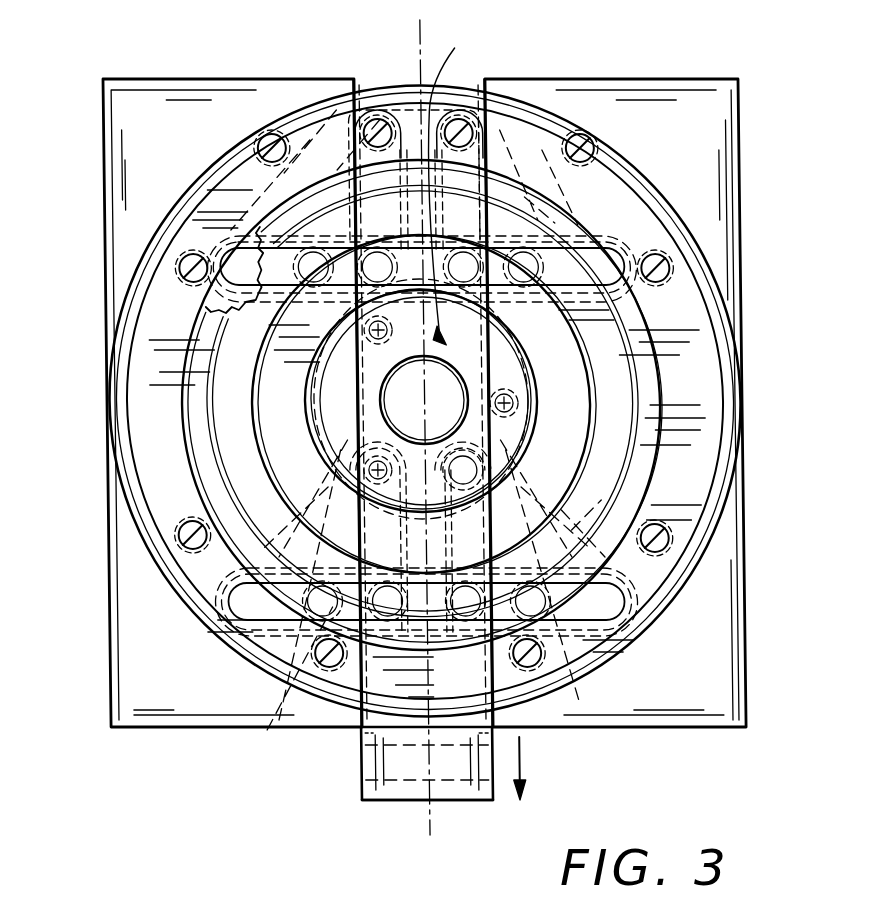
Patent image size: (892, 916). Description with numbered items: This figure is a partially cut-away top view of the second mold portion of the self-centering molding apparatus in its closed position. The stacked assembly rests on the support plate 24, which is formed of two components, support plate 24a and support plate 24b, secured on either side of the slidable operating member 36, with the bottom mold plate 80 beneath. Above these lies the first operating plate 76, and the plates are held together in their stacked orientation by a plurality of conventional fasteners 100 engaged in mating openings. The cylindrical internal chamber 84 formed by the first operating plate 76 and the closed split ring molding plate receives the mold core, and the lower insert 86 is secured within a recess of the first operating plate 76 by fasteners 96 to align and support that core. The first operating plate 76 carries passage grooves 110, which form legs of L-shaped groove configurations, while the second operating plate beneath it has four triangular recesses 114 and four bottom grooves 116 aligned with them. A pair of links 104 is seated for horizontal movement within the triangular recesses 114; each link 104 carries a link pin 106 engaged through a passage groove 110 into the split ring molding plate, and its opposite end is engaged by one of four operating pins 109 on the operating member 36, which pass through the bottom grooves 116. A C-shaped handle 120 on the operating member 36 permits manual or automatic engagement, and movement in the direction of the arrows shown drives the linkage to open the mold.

The support plate 24 is at (441, 423).
The support plate component 24a is at (579, 727).
The support plate component 24b is at (156, 728).
The operating member 36 is at (361, 760).
The first operating plate 76 is at (683, 377).
The bottom mold plate 80 is at (723, 562).
The cylindrical internal chamber 84 is at (460, 189).
The lower insert 86 is at (560, 370).
The fasteners 96 is at (370, 337).
The fasteners 100 is at (184, 257).
The links 104 is at (605, 153).
The link pins 106 is at (263, 730).
The operating pins 109 is at (509, 103).
The passage grooves 110 is at (191, 300).
The triangular recesses 114 is at (200, 580).
The bottom grooves 116 is at (407, 77).
The C-shaped handle 120 is at (360, 793).
The axis A is at (420, 818).